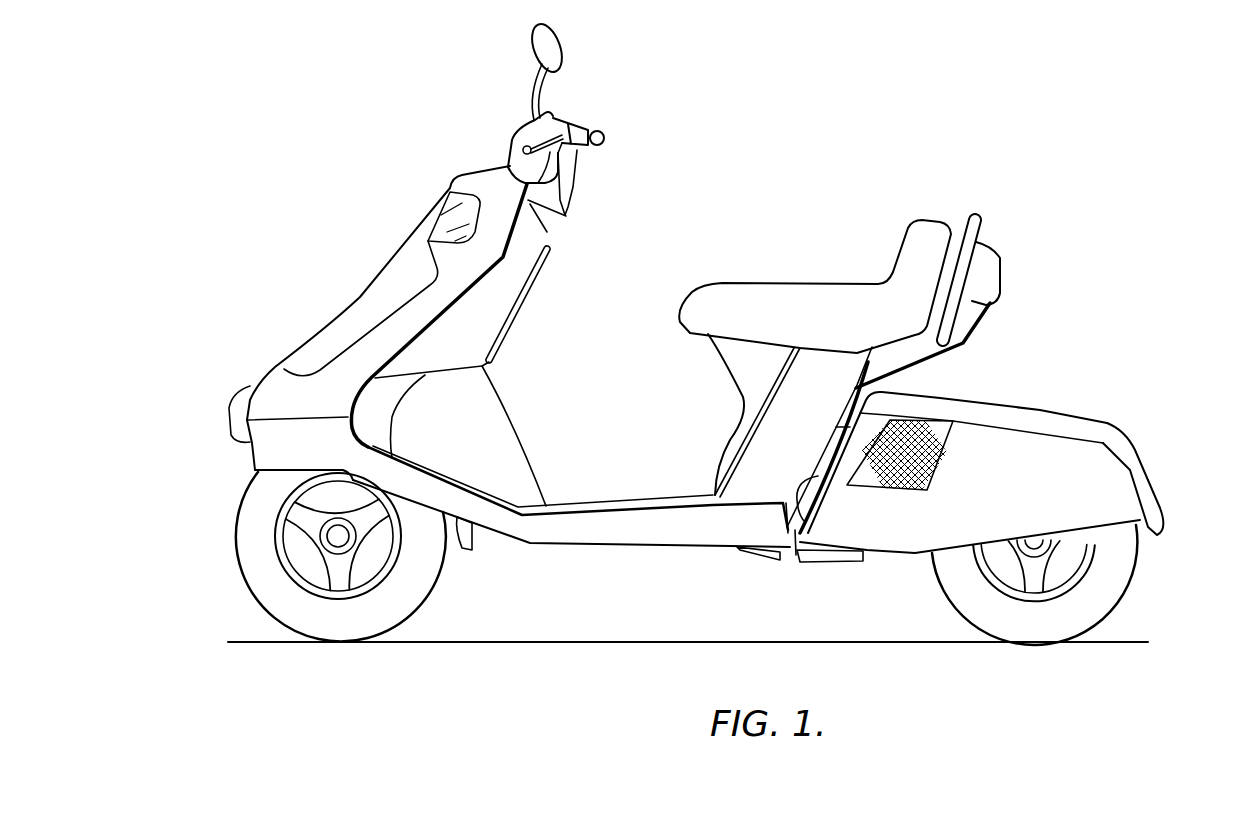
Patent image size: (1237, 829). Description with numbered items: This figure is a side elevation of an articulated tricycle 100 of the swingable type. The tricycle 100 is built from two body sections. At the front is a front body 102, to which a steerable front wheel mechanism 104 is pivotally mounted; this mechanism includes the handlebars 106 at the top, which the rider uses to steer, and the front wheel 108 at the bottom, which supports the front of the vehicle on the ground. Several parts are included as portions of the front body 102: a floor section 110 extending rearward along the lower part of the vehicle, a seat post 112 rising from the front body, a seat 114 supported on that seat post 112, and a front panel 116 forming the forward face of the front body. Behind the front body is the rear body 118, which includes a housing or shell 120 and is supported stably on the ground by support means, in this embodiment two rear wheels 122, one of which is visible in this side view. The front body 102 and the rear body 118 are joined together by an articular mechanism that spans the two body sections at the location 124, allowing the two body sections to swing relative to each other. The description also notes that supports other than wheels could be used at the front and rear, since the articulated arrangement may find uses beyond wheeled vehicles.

The articulated tricycle 100 is at (694, 358).
The front body 102 is at (500, 397).
The steerable front wheel mechanism 104 is at (560, 120).
The handlebars 106 is at (602, 136).
The front wheel 108 is at (250, 557).
The floor section 110 is at (650, 535).
The seat post 112 is at (768, 437).
The seat 114 is at (788, 297).
The front panel 116 is at (428, 248).
The rear body 118 is at (1063, 413).
The housing or shell 120 is at (1130, 467).
The rear wheels 122 is at (1053, 627).
The articular mechanism location 124 is at (785, 560).